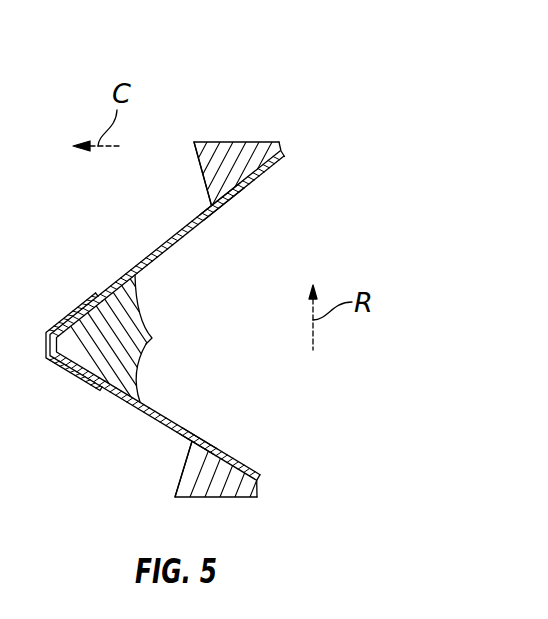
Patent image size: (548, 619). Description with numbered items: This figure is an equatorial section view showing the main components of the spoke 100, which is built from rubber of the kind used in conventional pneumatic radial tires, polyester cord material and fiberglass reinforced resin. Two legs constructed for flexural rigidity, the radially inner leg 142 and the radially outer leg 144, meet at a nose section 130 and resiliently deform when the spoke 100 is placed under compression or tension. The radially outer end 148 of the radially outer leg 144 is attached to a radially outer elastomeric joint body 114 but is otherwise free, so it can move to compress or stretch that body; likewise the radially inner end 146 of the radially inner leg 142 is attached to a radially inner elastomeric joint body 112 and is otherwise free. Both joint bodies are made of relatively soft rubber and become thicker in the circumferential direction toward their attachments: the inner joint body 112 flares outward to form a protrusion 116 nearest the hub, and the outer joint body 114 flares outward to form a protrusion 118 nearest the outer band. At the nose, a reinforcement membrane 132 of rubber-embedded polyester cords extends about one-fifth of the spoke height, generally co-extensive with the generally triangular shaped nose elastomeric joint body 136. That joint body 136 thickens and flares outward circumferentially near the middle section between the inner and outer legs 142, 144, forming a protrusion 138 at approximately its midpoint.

The spoke 100 is at (328, 88).
The radially inner elastomeric joint body 112 is at (191, 462).
The radially outer elastomeric joint body 114 is at (213, 178).
The protrusion 116 is at (180, 493).
The protrusion 118 is at (207, 145).
The nose section 130 is at (125, 303).
The membrane 132 is at (72, 374).
The nose elastomeric joint body 136 is at (130, 352).
The protrusion 138 is at (148, 340).
The radially inner leg 142 is at (172, 421).
The radially outer leg 144 is at (182, 234).
The radially inner end 146 is at (257, 478).
The radially outer end 148 is at (281, 157).